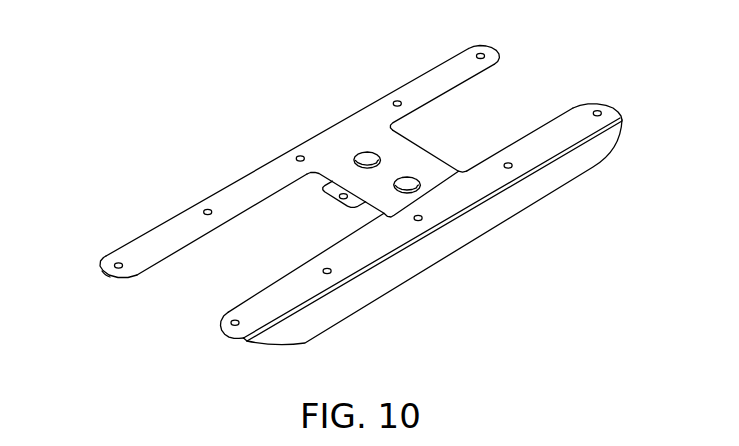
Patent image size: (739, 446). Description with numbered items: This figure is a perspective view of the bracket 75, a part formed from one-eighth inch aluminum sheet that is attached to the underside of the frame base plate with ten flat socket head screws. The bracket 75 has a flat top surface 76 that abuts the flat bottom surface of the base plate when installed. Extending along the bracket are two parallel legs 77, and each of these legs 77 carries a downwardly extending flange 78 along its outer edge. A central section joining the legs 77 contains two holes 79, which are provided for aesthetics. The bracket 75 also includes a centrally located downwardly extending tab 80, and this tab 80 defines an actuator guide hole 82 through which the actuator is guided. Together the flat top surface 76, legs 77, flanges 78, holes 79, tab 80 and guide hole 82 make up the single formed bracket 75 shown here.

The bracket 75 is at (195, 206).
The flat top surface 76 is at (447, 181).
The parallel legs 77 is at (220, 331).
The downwardly extending flange 78 is at (448, 242).
The holes 79 is at (408, 176).
The downwardly extending tab 80 is at (338, 183).
The actuator guide hole 82 is at (337, 199).